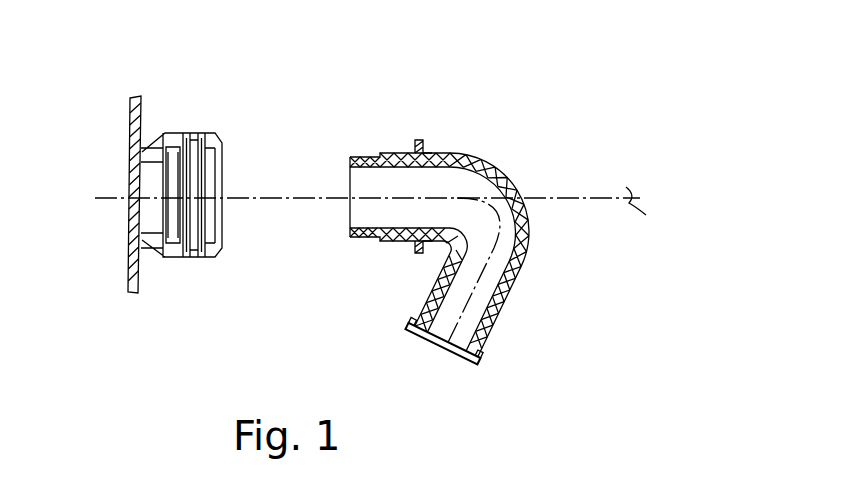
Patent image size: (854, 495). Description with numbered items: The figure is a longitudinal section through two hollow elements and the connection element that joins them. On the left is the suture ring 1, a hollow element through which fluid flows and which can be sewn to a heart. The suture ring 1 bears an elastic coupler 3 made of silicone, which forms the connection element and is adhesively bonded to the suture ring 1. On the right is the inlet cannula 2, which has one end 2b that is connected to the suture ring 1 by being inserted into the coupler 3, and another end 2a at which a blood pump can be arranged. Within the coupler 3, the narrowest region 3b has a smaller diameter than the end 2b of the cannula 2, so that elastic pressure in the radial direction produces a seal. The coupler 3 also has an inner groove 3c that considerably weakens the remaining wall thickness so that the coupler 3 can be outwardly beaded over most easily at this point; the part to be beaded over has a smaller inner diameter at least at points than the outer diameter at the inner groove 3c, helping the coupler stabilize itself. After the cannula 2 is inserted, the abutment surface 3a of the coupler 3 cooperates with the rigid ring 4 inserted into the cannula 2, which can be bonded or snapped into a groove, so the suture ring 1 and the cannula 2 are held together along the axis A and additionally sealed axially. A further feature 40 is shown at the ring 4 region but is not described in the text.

The suture ring 1 is at (93, 154).
The inlet cannula 2 is at (407, 206).
The other end of the inlet cannula 2a is at (407, 359).
The end of the inlet cannula 2b is at (333, 241).
The elastic coupler 3 is at (144, 188).
The abutment surface of the coupler 3a is at (218, 245).
The narrowest region of the coupler 3b is at (120, 206).
The inner groove 3c is at (139, 257).
The rigid ring 4 is at (406, 133).
The tab base 40 is at (472, 127).
The axis A is at (394, 264).